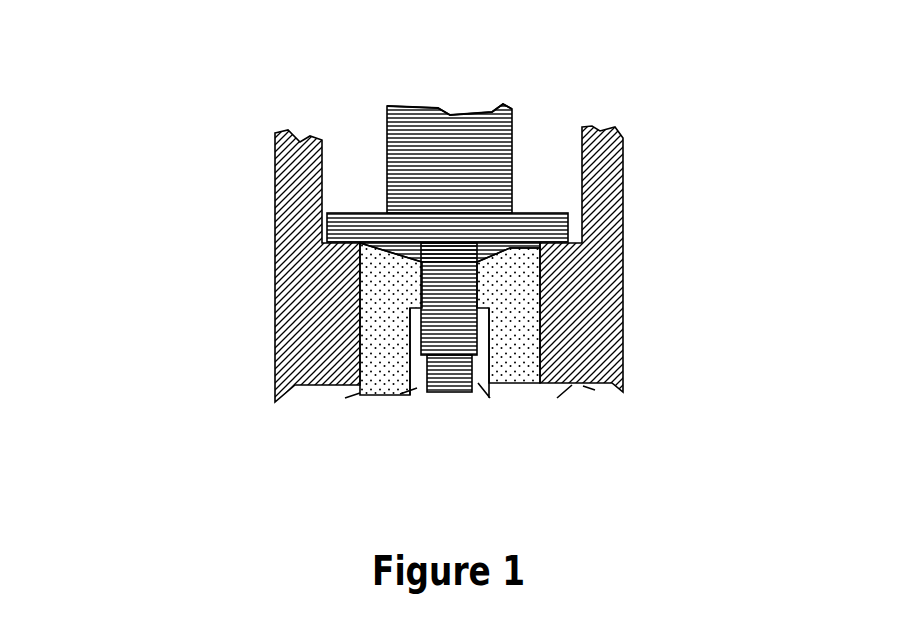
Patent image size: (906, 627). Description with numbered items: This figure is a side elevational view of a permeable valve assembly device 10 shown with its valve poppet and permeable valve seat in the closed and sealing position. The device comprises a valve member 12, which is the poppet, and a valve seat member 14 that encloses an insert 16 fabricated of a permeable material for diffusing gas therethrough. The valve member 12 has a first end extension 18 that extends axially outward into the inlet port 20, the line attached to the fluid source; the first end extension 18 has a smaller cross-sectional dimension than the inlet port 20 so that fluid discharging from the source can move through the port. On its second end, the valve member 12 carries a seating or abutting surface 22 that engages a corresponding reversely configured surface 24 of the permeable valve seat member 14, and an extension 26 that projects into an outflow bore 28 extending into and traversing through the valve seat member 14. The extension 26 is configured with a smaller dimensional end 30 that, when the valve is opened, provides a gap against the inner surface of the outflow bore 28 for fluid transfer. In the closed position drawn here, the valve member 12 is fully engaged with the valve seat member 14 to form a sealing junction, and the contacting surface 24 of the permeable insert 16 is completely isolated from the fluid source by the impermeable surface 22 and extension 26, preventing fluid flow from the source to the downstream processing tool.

The valve assembly device 10 is at (160, 157).
The valve member 12 is at (413, 183).
The valve seat member 14 is at (293, 223).
The insert 16 is at (378, 292).
The first end extension 18 is at (475, 102).
The inlet port 20 is at (543, 145).
The seating surface 22 is at (570, 220).
The reversely configured surface 24 is at (522, 258).
The extension 26 is at (421, 313).
The outflow bore 28 is at (478, 383).
The smaller dimensional end 30 is at (455, 385).